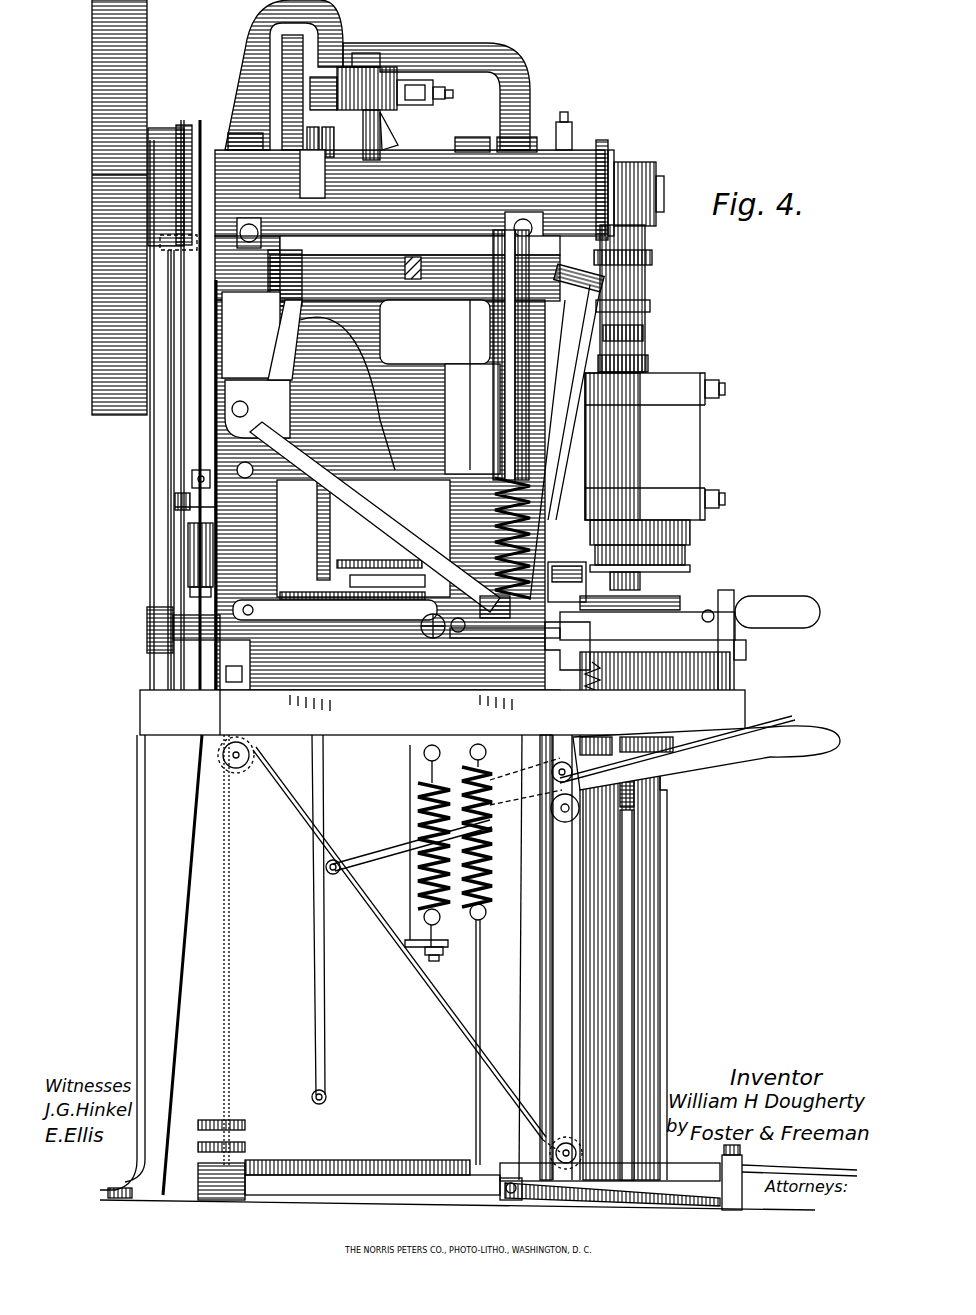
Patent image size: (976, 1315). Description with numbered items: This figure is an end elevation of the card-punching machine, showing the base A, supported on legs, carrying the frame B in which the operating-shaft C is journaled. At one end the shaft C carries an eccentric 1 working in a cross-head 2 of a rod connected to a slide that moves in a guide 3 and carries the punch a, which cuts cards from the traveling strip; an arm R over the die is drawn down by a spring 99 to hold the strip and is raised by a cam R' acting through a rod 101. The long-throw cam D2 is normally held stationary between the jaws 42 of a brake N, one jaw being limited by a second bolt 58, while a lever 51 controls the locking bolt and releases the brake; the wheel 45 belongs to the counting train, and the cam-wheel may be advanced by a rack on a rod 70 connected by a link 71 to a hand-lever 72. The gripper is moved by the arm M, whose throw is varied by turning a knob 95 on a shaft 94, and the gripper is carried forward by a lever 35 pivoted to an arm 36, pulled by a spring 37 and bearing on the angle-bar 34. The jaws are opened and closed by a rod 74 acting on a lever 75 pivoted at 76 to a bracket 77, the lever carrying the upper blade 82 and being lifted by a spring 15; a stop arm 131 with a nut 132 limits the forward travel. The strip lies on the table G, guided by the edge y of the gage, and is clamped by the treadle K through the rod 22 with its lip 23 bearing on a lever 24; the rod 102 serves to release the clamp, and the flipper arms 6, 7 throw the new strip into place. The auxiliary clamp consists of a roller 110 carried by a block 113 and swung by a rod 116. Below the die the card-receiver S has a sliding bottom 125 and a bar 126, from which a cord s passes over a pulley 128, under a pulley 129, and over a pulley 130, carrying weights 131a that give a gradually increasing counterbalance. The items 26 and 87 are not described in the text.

The operating-shaft C is at (160, 240).
The wheel 45 is at (287, 46).
The jaws of brake 42 is at (335, 87).
The brake N is at (415, 105).
The second bolt 58 is at (455, 101).
The lever 51 is at (393, 132).
The cam D2 is at (335, 136).
The cam R' is at (618, 183).
The cross-head 2 is at (630, 170).
The eccentric 1 is at (657, 198).
The knob 95 is at (650, 276).
The rod 101 is at (630, 314).
The frame B is at (251, 335).
The rod 74 is at (362, 392).
The arm M is at (530, 402).
The arm (stop) 131 is at (335, 611).
The arm 36 is at (248, 708).
The lever 35 is at (326, 632).
The spring 37 is at (380, 671).
The spring 15 is at (496, 538).
The pivot 76 is at (248, 409).
The bracket 77 is at (275, 378).
The lever 75 is at (383, 560).
The upper blade 82 is at (494, 582).
The nut 132 is at (450, 633).
The lever 24 is at (522, 612).
The angle-bar 34 is at (562, 654).
The block 26 is at (567, 582).
The guide 3 is at (695, 449).
The lip 23 is at (578, 398).
The shaft 94 is at (580, 441).
The rod or bar 102 is at (580, 476).
The arm 6 is at (665, 541).
The punch a is at (665, 576).
The arm 7 is at (670, 586).
The horizontal roller 110 is at (647, 622).
The edge of overhanging portion y is at (668, 622).
The arm R is at (786, 611).
The block 113 is at (712, 620).
The rod 116 is at (740, 672).
The table G is at (665, 625).
The rod 22 is at (572, 725).
The base A is at (442, 712).
The rod 87 is at (520, 608).
The cord s is at (226, 997).
The pulley 130 is at (245, 766).
The link 71 is at (336, 919).
The rod 70 is at (444, 816).
The spring 99 is at (490, 883).
The card-receiver S is at (608, 957).
The pulley 128 is at (542, 799).
The sliding bottom 125 is at (627, 834).
The bar 126 is at (627, 983).
The hand-lever 72 is at (735, 752).
The weights 131a is at (246, 1162).
The treadle K is at (504, 1194).
The pulley 129 is at (556, 1150).